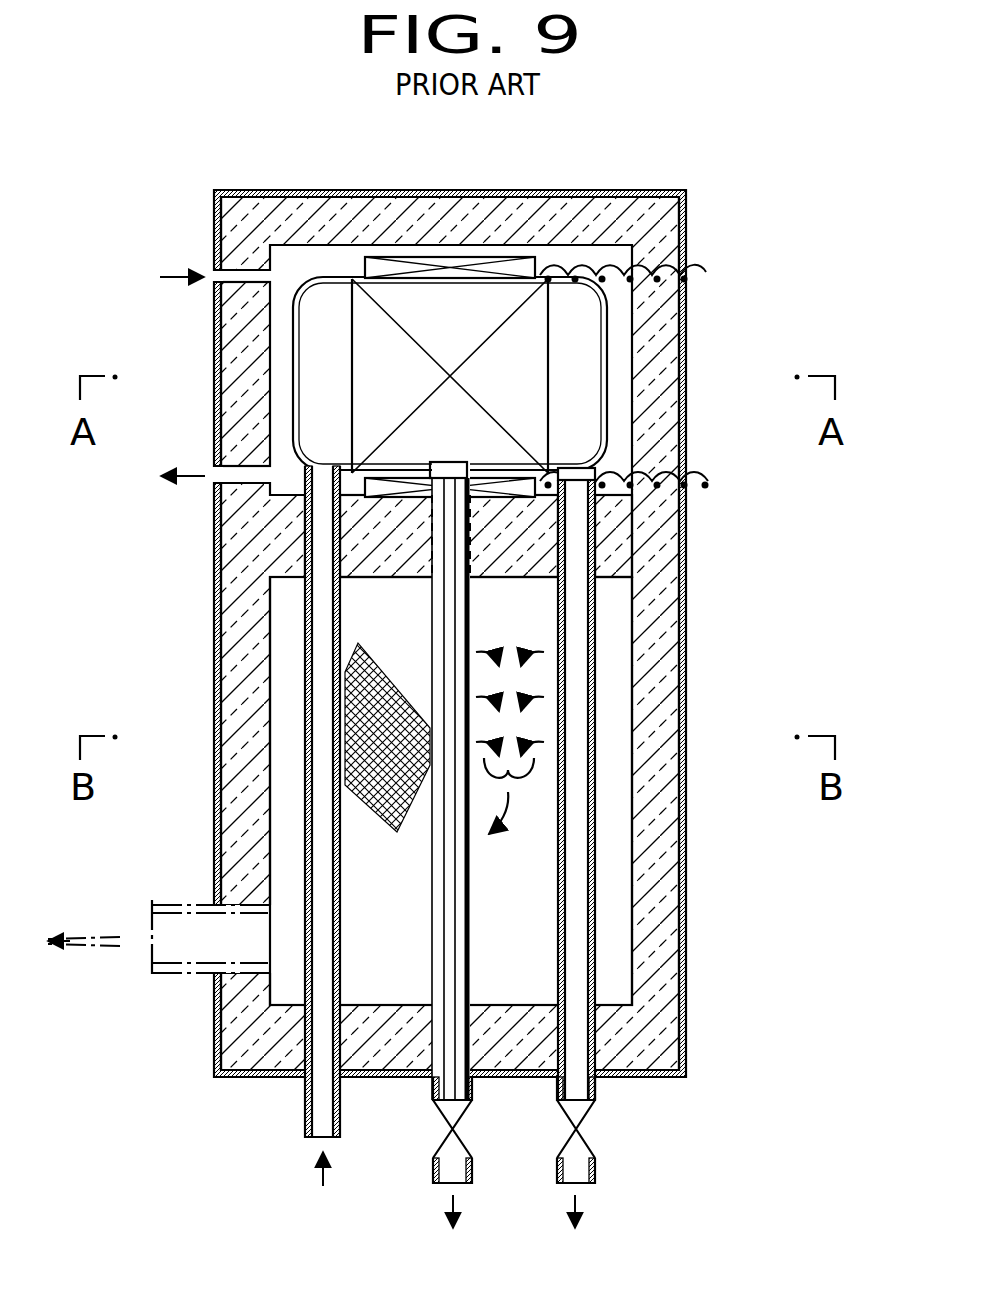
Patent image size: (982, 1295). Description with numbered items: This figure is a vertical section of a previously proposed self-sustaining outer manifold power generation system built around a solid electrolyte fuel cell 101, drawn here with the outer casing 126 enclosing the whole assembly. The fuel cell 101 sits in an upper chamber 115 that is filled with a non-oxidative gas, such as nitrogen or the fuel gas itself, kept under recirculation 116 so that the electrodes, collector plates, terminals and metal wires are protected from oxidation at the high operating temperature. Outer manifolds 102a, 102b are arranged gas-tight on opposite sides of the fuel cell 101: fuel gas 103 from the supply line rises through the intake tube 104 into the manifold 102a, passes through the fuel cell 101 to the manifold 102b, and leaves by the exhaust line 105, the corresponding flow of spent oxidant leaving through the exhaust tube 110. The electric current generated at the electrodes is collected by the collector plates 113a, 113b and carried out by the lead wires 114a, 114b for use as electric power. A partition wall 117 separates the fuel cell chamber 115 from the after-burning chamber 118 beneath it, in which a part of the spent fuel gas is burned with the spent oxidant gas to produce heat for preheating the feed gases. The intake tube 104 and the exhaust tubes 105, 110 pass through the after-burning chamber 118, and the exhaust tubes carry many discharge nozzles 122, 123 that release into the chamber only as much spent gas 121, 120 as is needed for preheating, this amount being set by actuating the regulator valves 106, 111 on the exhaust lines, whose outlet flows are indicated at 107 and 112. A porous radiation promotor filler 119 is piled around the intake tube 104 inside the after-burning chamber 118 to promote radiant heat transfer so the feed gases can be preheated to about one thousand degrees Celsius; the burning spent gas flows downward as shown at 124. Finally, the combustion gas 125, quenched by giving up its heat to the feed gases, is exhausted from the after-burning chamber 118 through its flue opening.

The solid electrolyte fuel cell 101 is at (540, 383).
The outer manifold 102a is at (338, 282).
The outer manifold 102b is at (578, 282).
The fuel gas 103 is at (320, 1182).
The intake tube 104 is at (315, 606).
The exhaust line 105 is at (582, 630).
The regulator valve 106 is at (580, 1128).
The exhaust flow 107 is at (580, 1195).
The exhaust tube 110 is at (468, 604).
The regulator valve 111 is at (450, 1128).
The discharge flow 112 is at (455, 1195).
The collector plate 113a is at (496, 268).
The collector plate 113b is at (500, 498).
The lead wire 114a is at (706, 268).
The lead wire 114b is at (712, 481).
The chamber 115 is at (288, 248).
The recirculation 116 is at (182, 277).
The partition wall 117 is at (232, 545).
The after-burning chamber 118 is at (530, 930).
The porous radiation promotor filler 119 is at (350, 760).
The flow arrows 120 is at (542, 650).
The spent gas 121 is at (480, 663).
The discharge nozzle 122 is at (560, 735).
The discharge nozzle 123 is at (462, 742).
The flow arrow 124 is at (503, 800).
The combustion gas 125 is at (60, 948).
The outer casing 126 is at (235, 222).